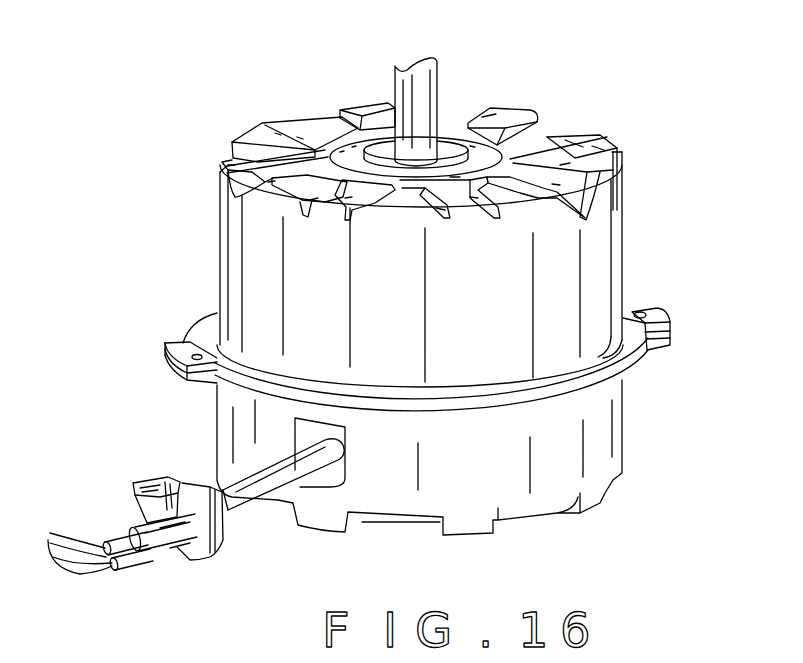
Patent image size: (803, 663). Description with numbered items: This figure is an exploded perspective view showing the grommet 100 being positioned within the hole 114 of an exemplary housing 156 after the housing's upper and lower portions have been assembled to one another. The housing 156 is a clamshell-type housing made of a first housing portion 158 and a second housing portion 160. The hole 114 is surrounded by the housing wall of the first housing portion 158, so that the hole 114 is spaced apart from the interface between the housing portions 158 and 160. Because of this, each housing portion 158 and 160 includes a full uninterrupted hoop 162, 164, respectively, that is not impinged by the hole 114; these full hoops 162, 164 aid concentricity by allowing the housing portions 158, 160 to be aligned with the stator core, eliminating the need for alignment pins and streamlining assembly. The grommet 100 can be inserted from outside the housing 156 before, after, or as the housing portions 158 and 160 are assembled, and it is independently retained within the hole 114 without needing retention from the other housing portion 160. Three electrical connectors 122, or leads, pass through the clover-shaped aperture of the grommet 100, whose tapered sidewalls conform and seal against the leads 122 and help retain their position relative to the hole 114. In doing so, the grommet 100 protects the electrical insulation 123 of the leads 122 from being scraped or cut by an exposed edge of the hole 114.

The housing 156 is at (620, 103).
The first housing portion 158 is at (600, 239).
The second housing portion 160 is at (598, 428).
The full uninterrupted hoop 162 is at (650, 316).
The full uninterrupted hoop 164 is at (655, 347).
The grommet 100 is at (148, 480).
The electrical connectors 122 is at (48, 540).
The electrical insulation 123 is at (289, 490).
The hole 114 is at (347, 437).